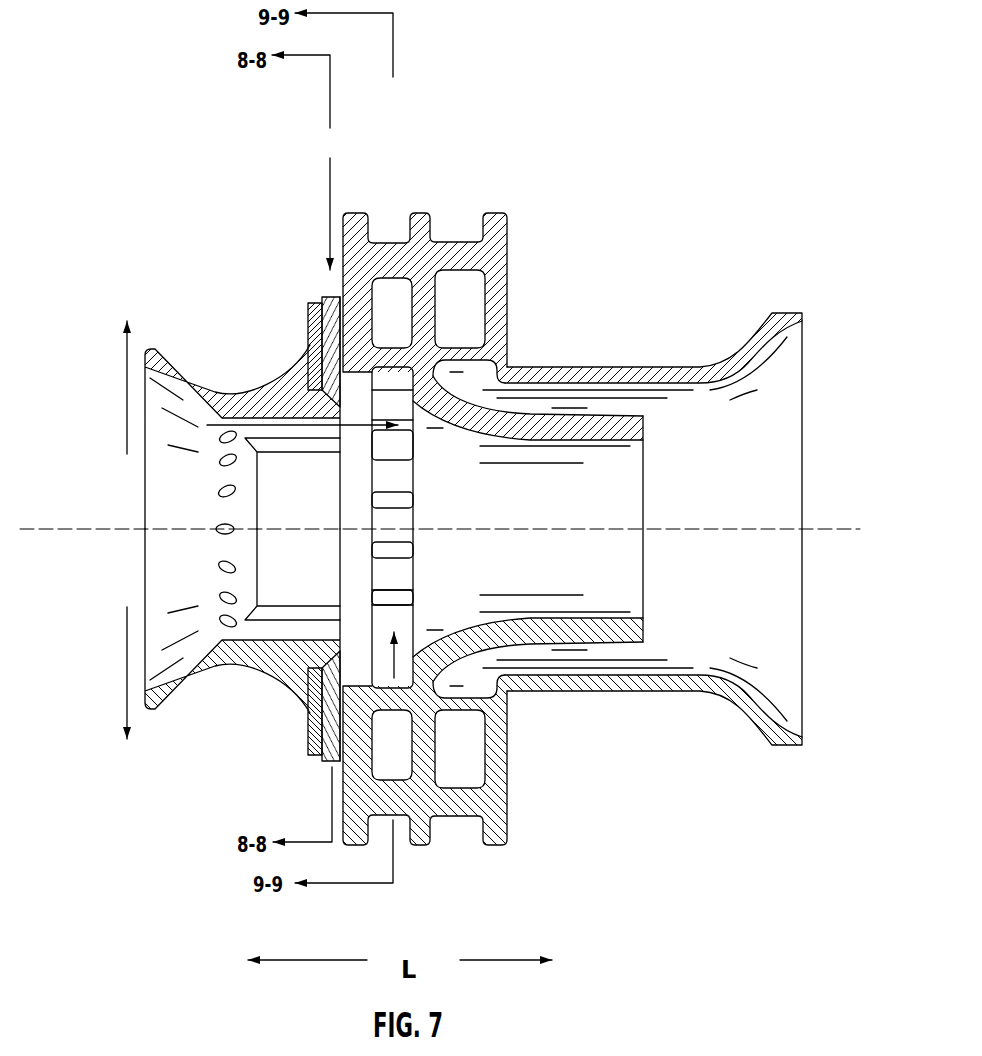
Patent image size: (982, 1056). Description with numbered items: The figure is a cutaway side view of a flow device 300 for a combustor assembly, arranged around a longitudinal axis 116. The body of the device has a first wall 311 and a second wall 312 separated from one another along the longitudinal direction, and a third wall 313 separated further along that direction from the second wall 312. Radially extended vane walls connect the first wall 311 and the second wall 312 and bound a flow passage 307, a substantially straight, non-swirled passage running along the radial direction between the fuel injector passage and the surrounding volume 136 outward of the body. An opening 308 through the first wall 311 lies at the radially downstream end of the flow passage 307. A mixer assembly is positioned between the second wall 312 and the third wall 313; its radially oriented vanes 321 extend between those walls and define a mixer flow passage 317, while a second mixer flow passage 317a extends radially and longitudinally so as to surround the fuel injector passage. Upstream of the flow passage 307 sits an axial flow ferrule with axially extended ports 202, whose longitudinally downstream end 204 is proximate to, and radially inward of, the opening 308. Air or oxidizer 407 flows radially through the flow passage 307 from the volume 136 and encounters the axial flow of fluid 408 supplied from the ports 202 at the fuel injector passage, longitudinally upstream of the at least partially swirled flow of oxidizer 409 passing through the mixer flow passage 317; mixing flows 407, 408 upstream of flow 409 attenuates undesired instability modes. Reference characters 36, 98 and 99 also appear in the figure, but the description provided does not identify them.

The radial direction 36 is at (453, 110).
The downstream direction 98 is at (852, 405).
The upstream direction 99 is at (78, 400).
The longitudinal axis 116 is at (612, 540).
The surrounding volume 136 is at (431, 928).
The axially extended ports 202 is at (188, 383).
The longitudinally downstream end 204 is at (342, 616).
The flow device 300 is at (641, 156).
The flow passage 307 is at (333, 340).
The opening 308 is at (262, 658).
The first wall 311 is at (313, 302).
The second wall 312 is at (348, 217).
The third wall 313 is at (430, 238).
The mixer flow passage 317 is at (385, 730).
The second mixer flow passage 317a is at (542, 397).
The radially oriented vanes 321 is at (397, 403).
The flow of fluid 407 is at (331, 178).
The axial flow of fluid 408 is at (290, 426).
The swirled flow of oxidizer 409 is at (417, 660).